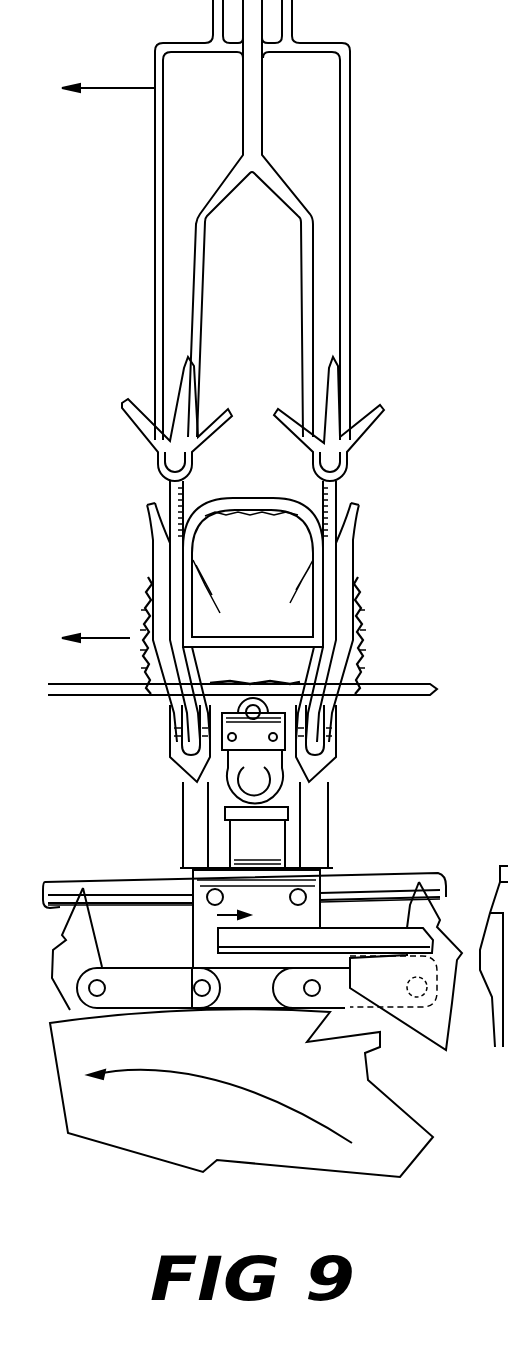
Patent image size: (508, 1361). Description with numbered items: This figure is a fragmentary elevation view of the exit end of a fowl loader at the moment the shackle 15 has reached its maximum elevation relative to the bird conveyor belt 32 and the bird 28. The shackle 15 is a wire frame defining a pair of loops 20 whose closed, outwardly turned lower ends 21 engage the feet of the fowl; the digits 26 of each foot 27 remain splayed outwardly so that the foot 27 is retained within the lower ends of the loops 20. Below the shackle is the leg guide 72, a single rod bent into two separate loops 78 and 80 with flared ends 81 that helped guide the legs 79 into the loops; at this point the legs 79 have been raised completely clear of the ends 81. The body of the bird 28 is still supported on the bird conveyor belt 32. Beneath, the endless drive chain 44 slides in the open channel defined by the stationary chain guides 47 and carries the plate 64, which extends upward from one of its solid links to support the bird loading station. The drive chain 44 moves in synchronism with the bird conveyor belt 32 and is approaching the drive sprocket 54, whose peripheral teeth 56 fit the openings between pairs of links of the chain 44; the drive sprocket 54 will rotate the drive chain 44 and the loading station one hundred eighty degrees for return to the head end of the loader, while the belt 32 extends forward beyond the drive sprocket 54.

The shackle 15 is at (155, 256).
The loops 20 is at (323, 283).
The lower ends 21 is at (158, 472).
The digits 26 is at (139, 407).
The foot 27 is at (278, 407).
The bird 28 is at (143, 617).
The bird conveyor belt 32 is at (372, 690).
The drive chain 44 is at (138, 975).
The chain guides 47 is at (433, 1044).
The drive sprocket 54 is at (428, 1137).
The peripheral teeth 56 is at (365, 1052).
The plate 64 is at (313, 920).
The leg guide 72 is at (239, 499).
The loop 78 is at (187, 710).
The legs 79 is at (186, 504).
The loop 80 is at (320, 710).
The ends 81 is at (153, 500).